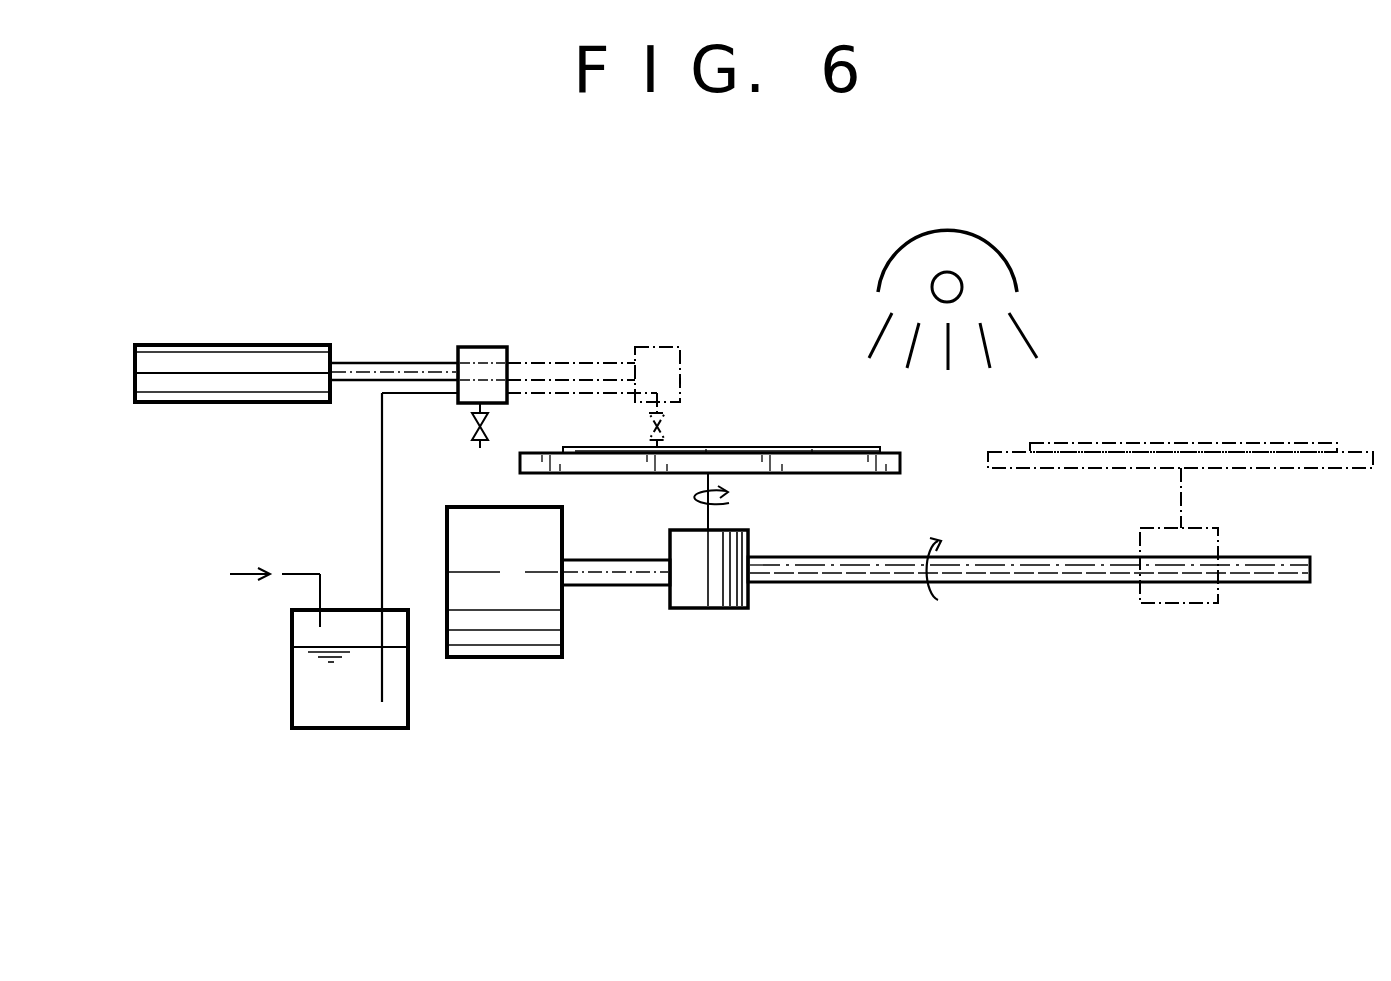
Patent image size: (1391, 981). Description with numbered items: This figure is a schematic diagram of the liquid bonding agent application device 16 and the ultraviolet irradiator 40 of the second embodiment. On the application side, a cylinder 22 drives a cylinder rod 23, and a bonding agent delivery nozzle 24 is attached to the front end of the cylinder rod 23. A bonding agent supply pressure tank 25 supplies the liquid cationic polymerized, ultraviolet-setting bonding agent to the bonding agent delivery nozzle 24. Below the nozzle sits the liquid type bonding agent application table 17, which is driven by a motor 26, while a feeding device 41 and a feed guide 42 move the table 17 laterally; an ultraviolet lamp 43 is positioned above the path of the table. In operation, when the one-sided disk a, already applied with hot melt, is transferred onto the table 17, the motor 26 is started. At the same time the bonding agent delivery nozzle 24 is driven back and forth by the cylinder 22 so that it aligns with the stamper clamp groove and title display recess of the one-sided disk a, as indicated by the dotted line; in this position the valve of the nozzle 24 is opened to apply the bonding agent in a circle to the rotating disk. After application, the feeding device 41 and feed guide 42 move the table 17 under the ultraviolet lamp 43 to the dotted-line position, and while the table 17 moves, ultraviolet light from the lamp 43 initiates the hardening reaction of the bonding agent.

The liquid bonding agent application device 16 is at (517, 217).
The cylinder 22 is at (223, 352).
The cylinder rod 23 is at (388, 366).
The bonding agent delivery nozzle 24 is at (470, 428).
The bonding agent supply pressure tank 25 is at (292, 693).
The motor 26 is at (713, 608).
The liquid type bonding agent application table 17 is at (853, 474).
The one-sided disk a is at (770, 446).
The ultraviolet irradiator 40 is at (925, 803).
The feeding device 41 is at (515, 658).
The feed guide 42 is at (1037, 572).
The ultraviolet lamp 43 is at (983, 237).